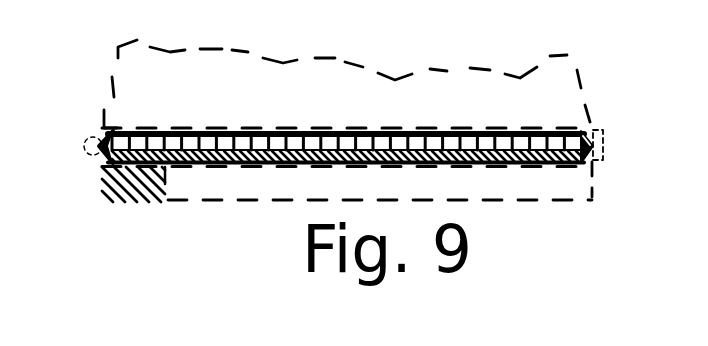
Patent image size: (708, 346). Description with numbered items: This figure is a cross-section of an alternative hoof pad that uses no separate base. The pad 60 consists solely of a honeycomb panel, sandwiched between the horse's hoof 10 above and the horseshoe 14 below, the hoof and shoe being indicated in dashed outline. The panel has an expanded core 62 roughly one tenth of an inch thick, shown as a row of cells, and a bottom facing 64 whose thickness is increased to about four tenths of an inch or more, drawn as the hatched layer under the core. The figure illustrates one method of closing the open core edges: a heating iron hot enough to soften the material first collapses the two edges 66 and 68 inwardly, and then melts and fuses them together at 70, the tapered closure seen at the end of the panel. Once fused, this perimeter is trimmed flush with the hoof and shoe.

The horse's hoof 10 is at (118, 70).
The horseshoe 14 is at (150, 193).
The pad 60 is at (188, 128).
The expanded core 62 is at (292, 140).
The bottom facing 64 is at (428, 156).
The edge 66 is at (101, 131).
The edge 68 is at (100, 160).
The fused perimeter 70 is at (97, 147).